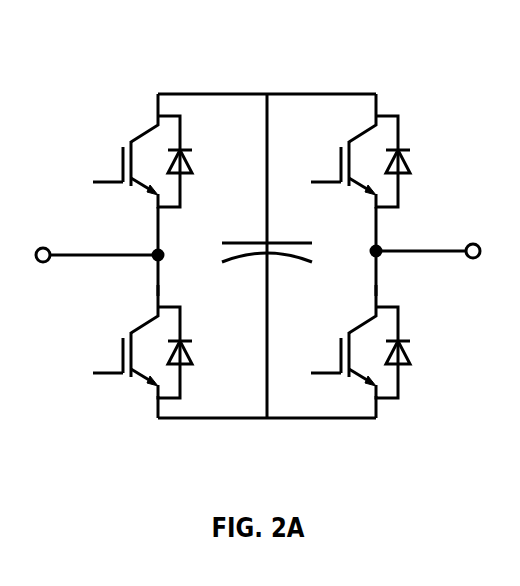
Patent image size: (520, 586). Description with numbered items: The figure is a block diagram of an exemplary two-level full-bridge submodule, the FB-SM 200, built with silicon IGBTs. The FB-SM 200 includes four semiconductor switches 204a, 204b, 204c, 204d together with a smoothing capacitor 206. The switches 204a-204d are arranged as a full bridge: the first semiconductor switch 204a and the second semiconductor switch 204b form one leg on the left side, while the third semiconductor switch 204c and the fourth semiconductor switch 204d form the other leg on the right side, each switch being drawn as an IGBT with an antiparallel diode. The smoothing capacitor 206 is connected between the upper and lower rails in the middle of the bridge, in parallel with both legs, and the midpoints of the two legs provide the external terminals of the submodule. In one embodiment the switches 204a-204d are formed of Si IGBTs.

The 2-level FB-SM 200 is at (261, 240).
The semiconductor switch 204a is at (105, 127).
The semiconductor switch 204b is at (118, 385).
The semiconductor switch 204c is at (410, 127).
The semiconductor switch 204d is at (402, 390).
The smoothing capacitor 206 is at (245, 238).